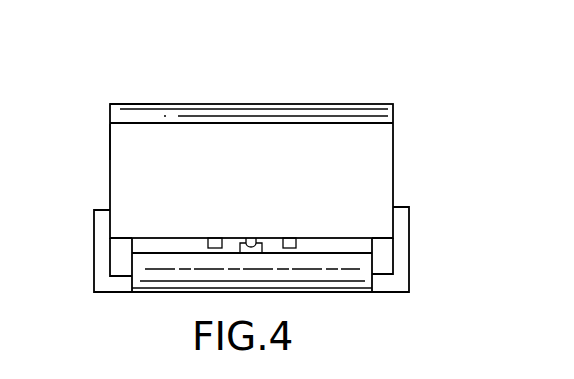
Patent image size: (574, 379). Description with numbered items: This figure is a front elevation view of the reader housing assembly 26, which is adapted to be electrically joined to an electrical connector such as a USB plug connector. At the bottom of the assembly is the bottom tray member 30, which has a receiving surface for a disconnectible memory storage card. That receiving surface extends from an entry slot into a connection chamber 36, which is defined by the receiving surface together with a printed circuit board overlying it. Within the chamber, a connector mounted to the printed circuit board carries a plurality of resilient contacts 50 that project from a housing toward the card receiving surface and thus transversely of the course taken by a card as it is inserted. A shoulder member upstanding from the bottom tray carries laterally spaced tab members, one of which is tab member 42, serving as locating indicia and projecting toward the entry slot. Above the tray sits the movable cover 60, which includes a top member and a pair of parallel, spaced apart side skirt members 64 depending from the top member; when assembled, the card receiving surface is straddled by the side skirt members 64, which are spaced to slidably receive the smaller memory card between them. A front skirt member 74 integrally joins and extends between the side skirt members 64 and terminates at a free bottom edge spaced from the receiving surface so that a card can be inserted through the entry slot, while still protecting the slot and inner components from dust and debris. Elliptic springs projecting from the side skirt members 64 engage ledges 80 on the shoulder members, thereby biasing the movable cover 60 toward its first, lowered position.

The reader housing assembly 26 is at (151, 66).
The bottom tray member 30 is at (147, 305).
The connection chamber 36 is at (336, 245).
The tab member 42 is at (400, 241).
The resilient contacts 50 is at (215, 243).
The movable cover 60 is at (403, 167).
The side skirt members 64 is at (395, 138).
The front skirt member 74 is at (130, 142).
The ledges 80 is at (100, 209).